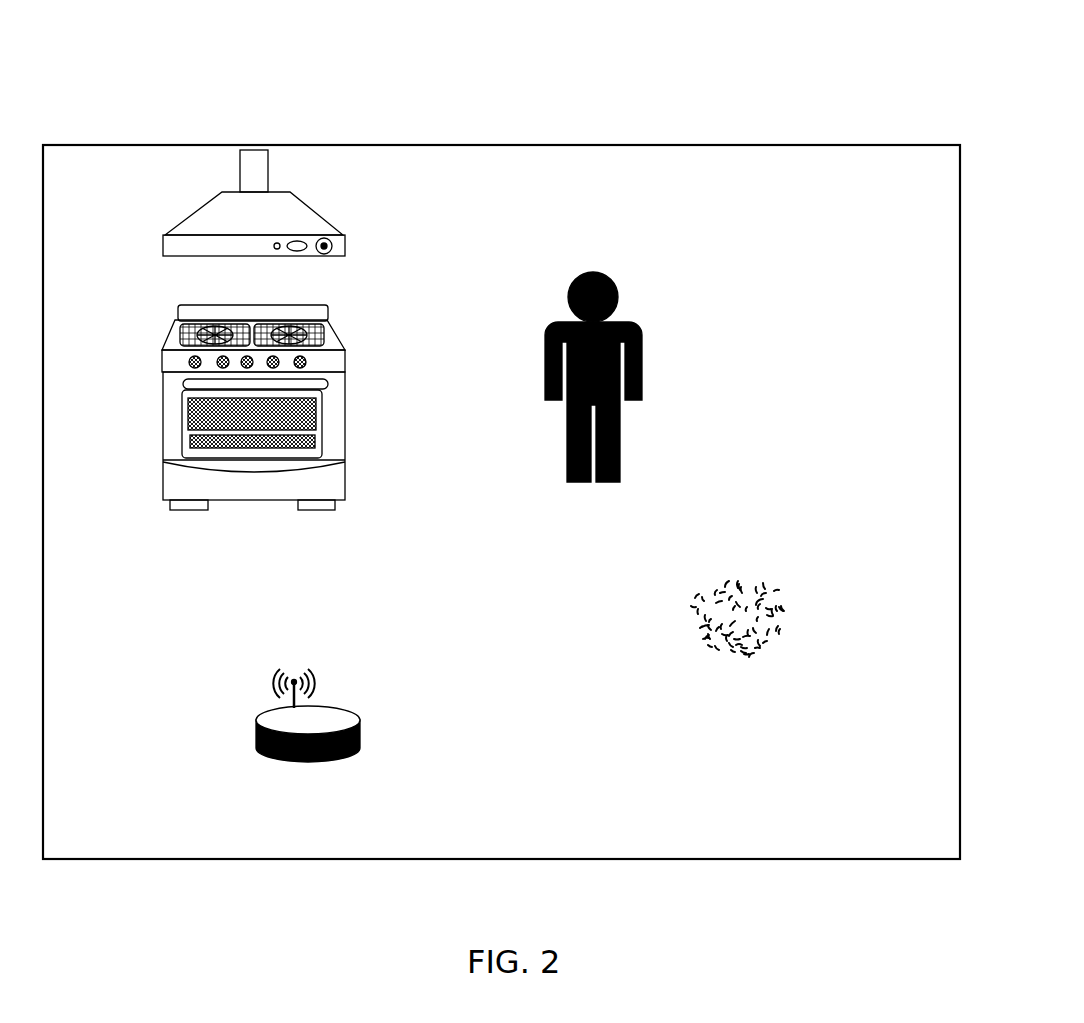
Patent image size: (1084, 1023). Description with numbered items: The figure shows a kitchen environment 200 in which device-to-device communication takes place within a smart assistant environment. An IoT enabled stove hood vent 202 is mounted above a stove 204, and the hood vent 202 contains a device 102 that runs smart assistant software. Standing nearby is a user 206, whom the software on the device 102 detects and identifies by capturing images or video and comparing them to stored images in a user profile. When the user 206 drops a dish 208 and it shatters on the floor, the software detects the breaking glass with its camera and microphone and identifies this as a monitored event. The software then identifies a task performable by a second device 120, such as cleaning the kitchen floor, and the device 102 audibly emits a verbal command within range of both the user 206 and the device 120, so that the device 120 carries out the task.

The kitchen environment 200 is at (697, 73).
The IoT enabled stove hood vent 202 is at (297, 197).
The device 102 is at (345, 238).
The stove 204 is at (345, 350).
The user 206 is at (642, 318).
The dish 208 is at (758, 562).
The device 120 is at (347, 703).